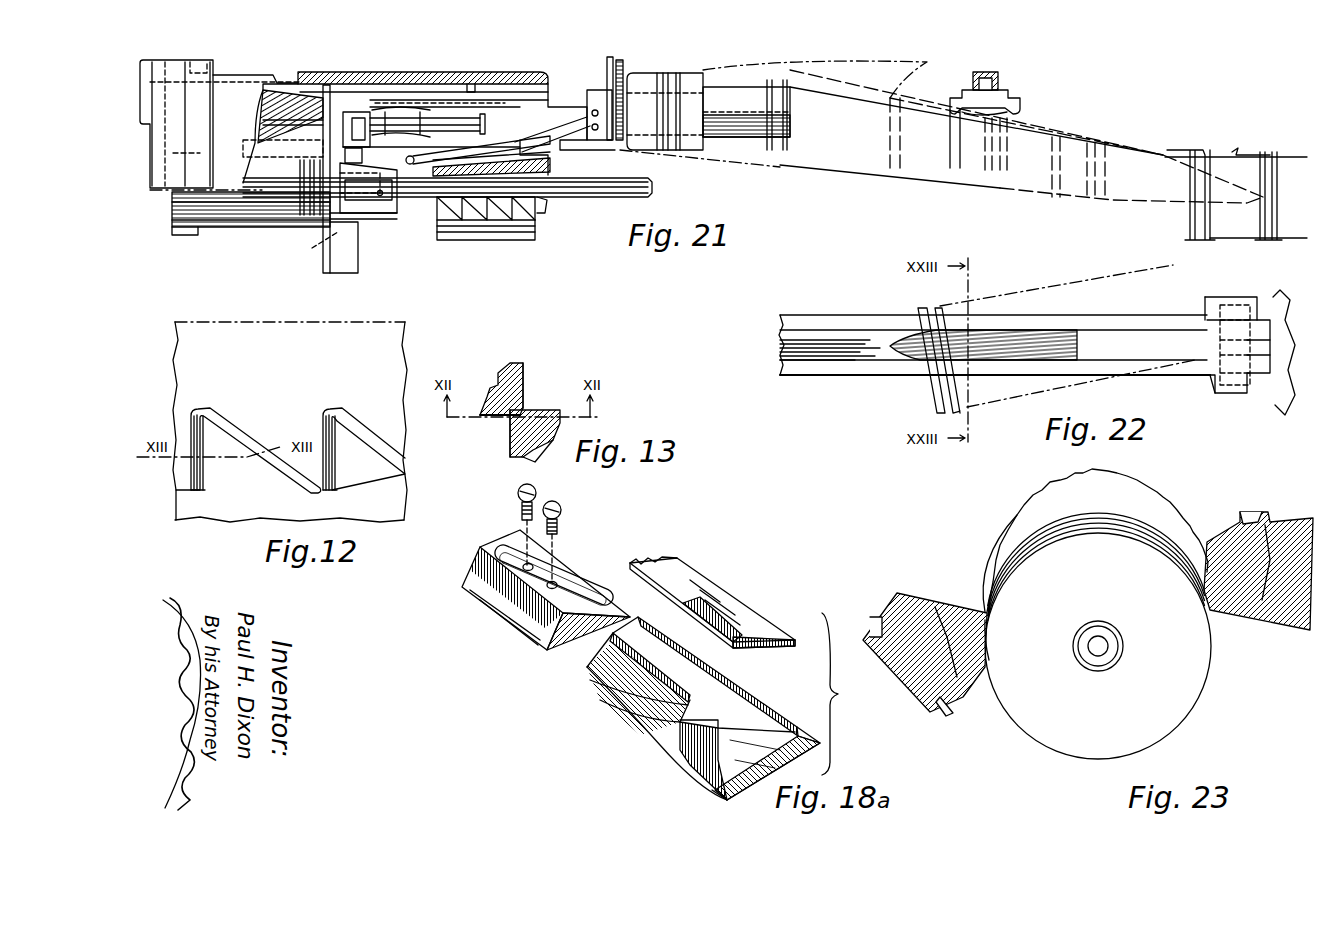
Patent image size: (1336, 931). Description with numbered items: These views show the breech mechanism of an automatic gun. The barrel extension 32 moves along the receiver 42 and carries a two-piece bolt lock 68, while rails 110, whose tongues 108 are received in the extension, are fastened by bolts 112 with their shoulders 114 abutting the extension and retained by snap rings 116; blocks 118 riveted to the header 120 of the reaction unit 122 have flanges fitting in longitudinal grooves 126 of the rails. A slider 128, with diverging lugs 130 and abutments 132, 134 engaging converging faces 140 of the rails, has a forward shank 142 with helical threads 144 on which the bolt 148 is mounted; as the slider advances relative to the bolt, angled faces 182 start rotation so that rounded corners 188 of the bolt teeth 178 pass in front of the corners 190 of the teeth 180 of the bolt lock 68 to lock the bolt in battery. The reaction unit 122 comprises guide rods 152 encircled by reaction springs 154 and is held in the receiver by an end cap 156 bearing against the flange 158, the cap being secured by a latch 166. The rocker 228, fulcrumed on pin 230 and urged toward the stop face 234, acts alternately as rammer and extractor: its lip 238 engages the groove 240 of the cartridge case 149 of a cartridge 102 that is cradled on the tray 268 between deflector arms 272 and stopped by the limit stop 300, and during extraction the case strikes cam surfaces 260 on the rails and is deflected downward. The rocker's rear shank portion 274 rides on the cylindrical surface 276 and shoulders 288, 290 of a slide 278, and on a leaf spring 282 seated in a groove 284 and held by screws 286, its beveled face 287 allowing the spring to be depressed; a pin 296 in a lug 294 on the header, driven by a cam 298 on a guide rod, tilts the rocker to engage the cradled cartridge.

In FIG. 22, the barrel extension 32 is at (905, 378).
In FIG. 23, the barrel extension 32 is at (913, 598).
In FIG. 21, the receiver 42 is at (330, 72).
In FIG. 12, the bolt lock 68 is at (249, 322).
In FIG. 13, the bolt lock 68 is at (525, 378).
In FIG. 21, the cartridge 102 is at (925, 65).
In FIG. 23, the cartridge 102 is at (1162, 494).
In FIG. 22, the tongues 108 is at (1225, 345).
In FIG. 21, the rails 110 is at (622, 200).
In FIG. 22, the rails 110 is at (822, 318).
In FIG. 23, the rails 110 is at (893, 662).
In FIG. 22, the bolts 112 is at (1250, 330).
In FIG. 22, the shoulders 114 is at (1215, 300).
In FIG. 21, the snap rings 116 is at (1262, 240).
In FIG. 22, the snap rings 116 is at (1240, 305).
In FIG. 21, the blocks 118 is at (353, 222).
In FIG. 21, the header 120 is at (343, 66).
In FIG. 21, the reaction unit 122 is at (294, 71).
In FIG. 23, the longitudinal grooves 126 is at (875, 617).
In FIG. 21, the slider 128 is at (255, 232).
In FIG. 21, the diverging lugs 130 is at (190, 236).
In FIG. 21, the abutments 132 is at (342, 273).
In FIG. 21, the abutments 134 is at (312, 248).
In FIG. 22, the converging faces 140 is at (832, 332).
In FIG. 21, the forward shank 142 is at (372, 232).
In FIG. 21, the helical threads 144 is at (409, 213).
In FIG. 21, the bolt 148 is at (565, 163).
In FIG. 12, the bolt 148 is at (177, 509).
In FIG. 13, the bolt 148 is at (538, 452).
In FIG. 21, the cartridge case 149 is at (700, 160).
In FIG. 22, the cartridge case 149 is at (965, 300).
In FIG. 23, the cartridge case 149 is at (1022, 513).
In FIG. 21, the guide rods 152 is at (262, 146).
In FIG. 21, the reaction springs 154 is at (260, 113).
In FIG. 21, the end cap 156 is at (160, 190).
In FIG. 21, the inwardly extending flange 158 is at (473, 86).
In FIG. 21, the latch 166 is at (165, 62).
In FIG. 21, the teeth 178 is at (500, 242).
In FIG. 12, the teeth 178 is at (242, 430).
In FIG. 13, the teeth 178 is at (534, 410).
In FIG. 12, the teeth 180 is at (293, 462).
In FIG. 13, the teeth 180 is at (496, 372).
In FIG. 21, the angled faces 182 is at (538, 207).
In FIG. 21, the rounded corners 188 is at (462, 242).
In FIG. 13, the rounded corners 188 is at (513, 433).
In FIG. 13, the corners 190 is at (496, 418).
In FIG. 21, the rocker 228 is at (478, 152).
In FIG. 21, the pin 230 is at (412, 156).
In FIG. 21, the stop face 234 is at (525, 137).
In FIG. 21, the lip 238 is at (624, 148).
In FIG. 21, the groove 240 is at (632, 73).
In FIG. 22, the groove 240 is at (928, 307).
In FIG. 23, the groove 240 is at (1093, 518).
In FIG. 22, the cam surfaces 260 is at (1000, 337).
In FIG. 23, the cam surfaces 260 is at (990, 657).
In FIG. 21, the tray 268 is at (752, 142).
In FIG. 21, the deflector arms 272 is at (1008, 92).
In FIG. 21, the rear shank portion 274 is at (346, 112).
In FIG. 18A, the cylindrical surface 276 is at (688, 718).
In FIG. 18A, the slide 278 is at (556, 553).
In FIG. 18A, the leaf spring 282 is at (702, 573).
In FIG. 18A, the groove 284 is at (572, 578).
In FIG. 18A, the screws 286 is at (545, 524).
In FIG. 18A, the beveled face 287 is at (710, 615).
In FIG. 18A, the shoulder 288 is at (756, 730).
In FIG. 18A, the shoulder 290 is at (641, 692).
In FIG. 21, the lug 294 is at (402, 97).
In FIG. 21, the pin 296 is at (354, 157).
In FIG. 21, the cam 298 is at (428, 92).
In FIG. 21, the limit stop 300 is at (558, 127).